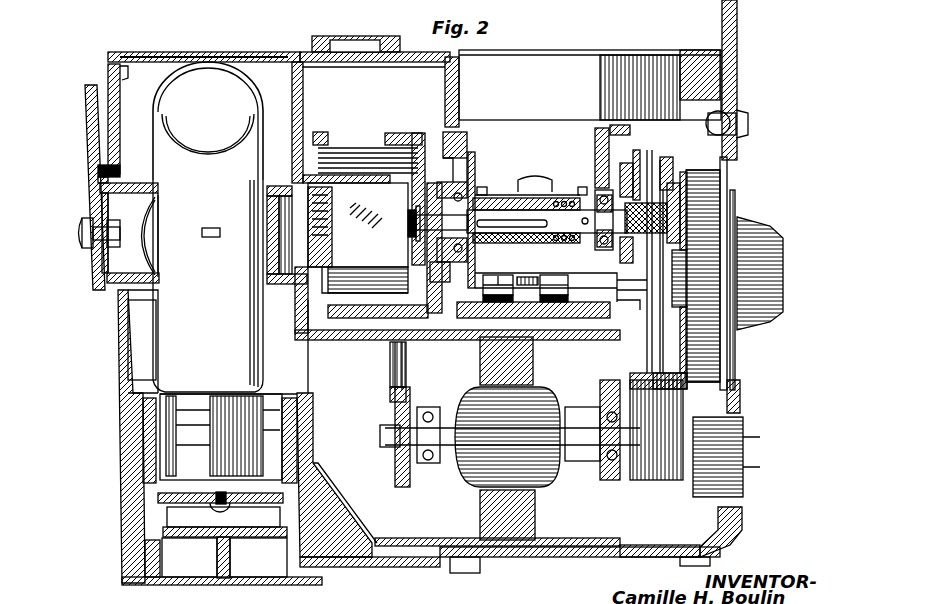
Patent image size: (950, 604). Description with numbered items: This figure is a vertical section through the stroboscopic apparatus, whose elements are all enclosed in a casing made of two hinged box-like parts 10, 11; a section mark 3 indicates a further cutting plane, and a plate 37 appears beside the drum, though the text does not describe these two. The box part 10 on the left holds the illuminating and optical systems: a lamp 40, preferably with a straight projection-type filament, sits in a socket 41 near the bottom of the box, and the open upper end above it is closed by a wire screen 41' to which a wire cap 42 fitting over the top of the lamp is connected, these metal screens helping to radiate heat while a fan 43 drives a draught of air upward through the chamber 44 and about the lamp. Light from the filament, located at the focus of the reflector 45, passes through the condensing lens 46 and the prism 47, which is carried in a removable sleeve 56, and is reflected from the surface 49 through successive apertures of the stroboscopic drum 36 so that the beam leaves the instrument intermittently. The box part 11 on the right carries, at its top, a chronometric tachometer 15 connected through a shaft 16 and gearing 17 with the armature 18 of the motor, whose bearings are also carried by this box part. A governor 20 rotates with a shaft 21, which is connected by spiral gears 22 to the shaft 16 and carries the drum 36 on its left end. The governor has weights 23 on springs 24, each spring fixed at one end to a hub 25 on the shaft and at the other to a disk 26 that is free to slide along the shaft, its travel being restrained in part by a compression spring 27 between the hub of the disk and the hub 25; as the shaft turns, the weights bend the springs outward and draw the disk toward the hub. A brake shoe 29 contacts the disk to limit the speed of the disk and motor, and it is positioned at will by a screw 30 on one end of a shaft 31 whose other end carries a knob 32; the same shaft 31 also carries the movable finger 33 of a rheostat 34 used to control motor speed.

The section line 3 is at (355, 0).
The box-like part 10 is at (108, 72).
The box-like part 11 is at (725, 110).
The chronometric tachometer 15 is at (590, 85).
The shaft 16 is at (665, 345).
The gearing 17 is at (655, 470).
The armature 18 is at (545, 487).
The governor 20 is at (541, 176).
The shaft 21 is at (510, 244).
The spiral gears 22 is at (668, 192).
The weights 23 is at (510, 190).
The springs 24 is at (498, 192).
The hub 25 is at (566, 276).
The disk 26 is at (477, 165).
The compression spring 27 is at (556, 195).
The brake shoe 29 is at (500, 284).
The screw 30 is at (530, 283).
The shaft 31 is at (635, 296).
The knob 32 is at (785, 235).
The movable finger 33 is at (710, 190).
The rheostat 34 is at (715, 210).
The stroboscopic drum 36 is at (402, 136).
The armature plate 37 is at (408, 222).
The lamp 40 is at (208, 286).
The socket 41 is at (184, 486).
The wire screen 41' is at (204, 40).
The wire cap 42 is at (153, 118).
The fan 43 is at (390, 370).
The chamber 44 is at (143, 352).
The reflector 45 is at (108, 292).
The condensing lens 46 is at (280, 186).
The prism 47 is at (350, 176).
The reflecting surface 49 is at (358, 238).
The sleeve 56 is at (330, 172).